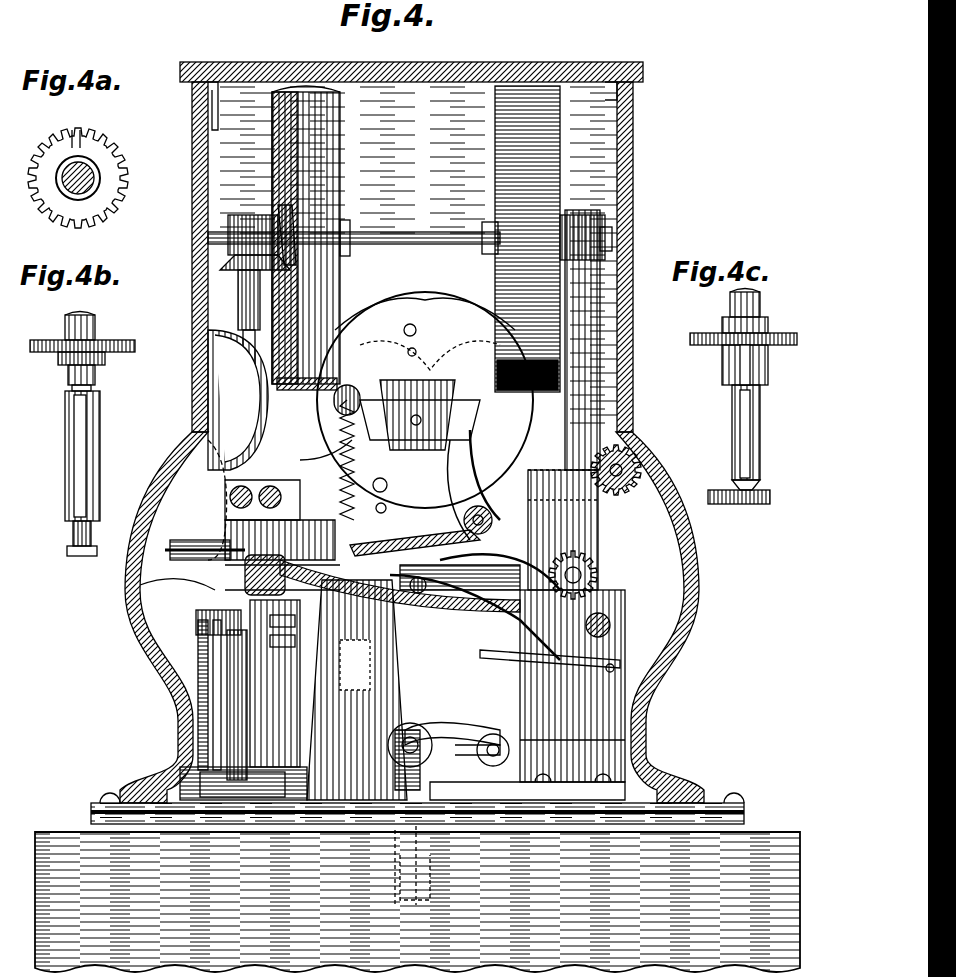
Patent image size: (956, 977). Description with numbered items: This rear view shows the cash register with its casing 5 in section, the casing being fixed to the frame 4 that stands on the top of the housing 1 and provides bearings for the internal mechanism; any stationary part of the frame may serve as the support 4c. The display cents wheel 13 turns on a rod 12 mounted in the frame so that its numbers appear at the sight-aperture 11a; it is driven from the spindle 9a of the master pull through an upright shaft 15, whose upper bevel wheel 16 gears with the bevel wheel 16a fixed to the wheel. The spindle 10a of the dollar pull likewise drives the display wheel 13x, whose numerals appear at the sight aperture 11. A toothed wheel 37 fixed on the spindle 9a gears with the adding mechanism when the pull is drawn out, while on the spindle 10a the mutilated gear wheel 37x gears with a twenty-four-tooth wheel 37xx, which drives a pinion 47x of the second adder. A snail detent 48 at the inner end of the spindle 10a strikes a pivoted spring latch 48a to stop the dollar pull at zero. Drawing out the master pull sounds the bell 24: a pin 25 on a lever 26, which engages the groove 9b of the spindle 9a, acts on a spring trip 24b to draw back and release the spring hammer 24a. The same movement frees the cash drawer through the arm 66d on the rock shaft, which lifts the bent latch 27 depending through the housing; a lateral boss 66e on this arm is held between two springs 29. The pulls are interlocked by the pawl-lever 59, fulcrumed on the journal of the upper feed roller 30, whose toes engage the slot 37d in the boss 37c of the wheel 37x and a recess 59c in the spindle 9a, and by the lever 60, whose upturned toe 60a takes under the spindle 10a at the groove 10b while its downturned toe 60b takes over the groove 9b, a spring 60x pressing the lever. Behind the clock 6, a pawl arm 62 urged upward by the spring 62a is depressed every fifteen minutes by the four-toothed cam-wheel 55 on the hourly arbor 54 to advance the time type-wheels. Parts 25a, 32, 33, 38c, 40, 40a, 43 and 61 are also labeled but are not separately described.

In FIG. 4, the housing 1 is at (417, 902).
In FIG. 4, the frame 4 is at (580, 325).
In FIG. 4, the support 4c is at (200, 622).
In FIG. 4, the casing 5 is at (196, 336).
In FIG. 4, the clock 6 is at (428, 316).
In FIG. 4, the pull-spindle 9a is at (228, 592).
In FIG. 4A, the pull-spindle 9a is at (100, 178).
In FIG. 4B, the pull-spindle 9a is at (70, 456).
In FIG. 4B, the circumferential groove 9b is at (72, 536).
In FIG. 4C, the spindle 10a is at (760, 436).
In FIG. 4C, the circumferential groove 10b is at (758, 484).
In FIG. 4, the sight aperture 11 is at (484, 228).
In FIG. 4, the sight-aperture 11a is at (348, 214).
In FIG. 4, the rod 12 is at (416, 234).
In FIG. 4, the display cents wheel 13 is at (328, 152).
In FIG. 4, the display wheel 13x is at (560, 168).
In FIG. 4, the upright shaft 15 is at (243, 322).
In FIG. 4, the bevel wheel 16 is at (222, 262).
In FIG. 4, the bevel wheel 16a is at (288, 210).
In FIG. 4, the bracket 24 is at (256, 366).
In FIG. 4, the spring hammer 24a is at (208, 456).
In FIG. 4, the spring trip 24b is at (140, 578).
In FIG. 4, the pin 25 is at (210, 562).
In FIG. 4, the lever pin 25a is at (299, 630).
In FIG. 4, the lever 26 is at (275, 683).
In FIG. 4, the bent latch 27 is at (396, 856).
In FIG. 4, the springs 29 is at (468, 840).
In FIG. 4, the feed rollers 30 is at (348, 624).
In FIG. 4, the rod 32 is at (200, 660).
In FIG. 4, the rod 33 is at (210, 690).
In FIG. 4A, the toothed wheel 37 is at (103, 146).
In FIG. 4B, the toothed wheel 37 is at (100, 336).
In FIG. 4, the mutilated gear wheel 37x is at (618, 578).
In FIG. 4C, the mutilated gear wheel 37x is at (770, 334).
In FIG. 4, the wheel 37xx is at (632, 460).
In FIG. 4C, the boss 37c is at (768, 374).
In FIG. 4C, the slot 37d is at (742, 358).
In FIG. 4, the link 38c is at (560, 660).
In FIG. 4, the rod 40 is at (239, 705).
In FIG. 4, the rod pin 40a is at (299, 651).
In FIG. 4, the wedge 43 is at (356, 620).
In FIG. 4, the pinion 47x is at (500, 444).
In FIG. 4, the snail detent 48 is at (600, 556).
In FIG. 4C, the snail detent 48 is at (744, 504).
In FIG. 4, the spring latch 48a is at (612, 622).
In FIG. 4, the arbor 54 is at (388, 488).
In FIG. 4, the cam-wheel 55 is at (388, 510).
In FIG. 4, the pawl-lever 59 is at (460, 574).
In FIG. 4B, the recess 59c is at (96, 390).
In FIG. 4, the lever 60 is at (478, 658).
In FIG. 4, the upturned toe 60a is at (502, 572).
In FIG. 4, the downwardly turned toe 60b is at (300, 530).
In FIG. 4, the spring 60x is at (282, 518).
In FIG. 4, the foot block 61 is at (245, 764).
In FIG. 4, the pawl arm 62 is at (430, 544).
In FIG. 4, the spring 62a is at (336, 468).
In FIG. 4, the arm 66d is at (432, 752).
In FIG. 4, the lateral boss 66e is at (426, 741).